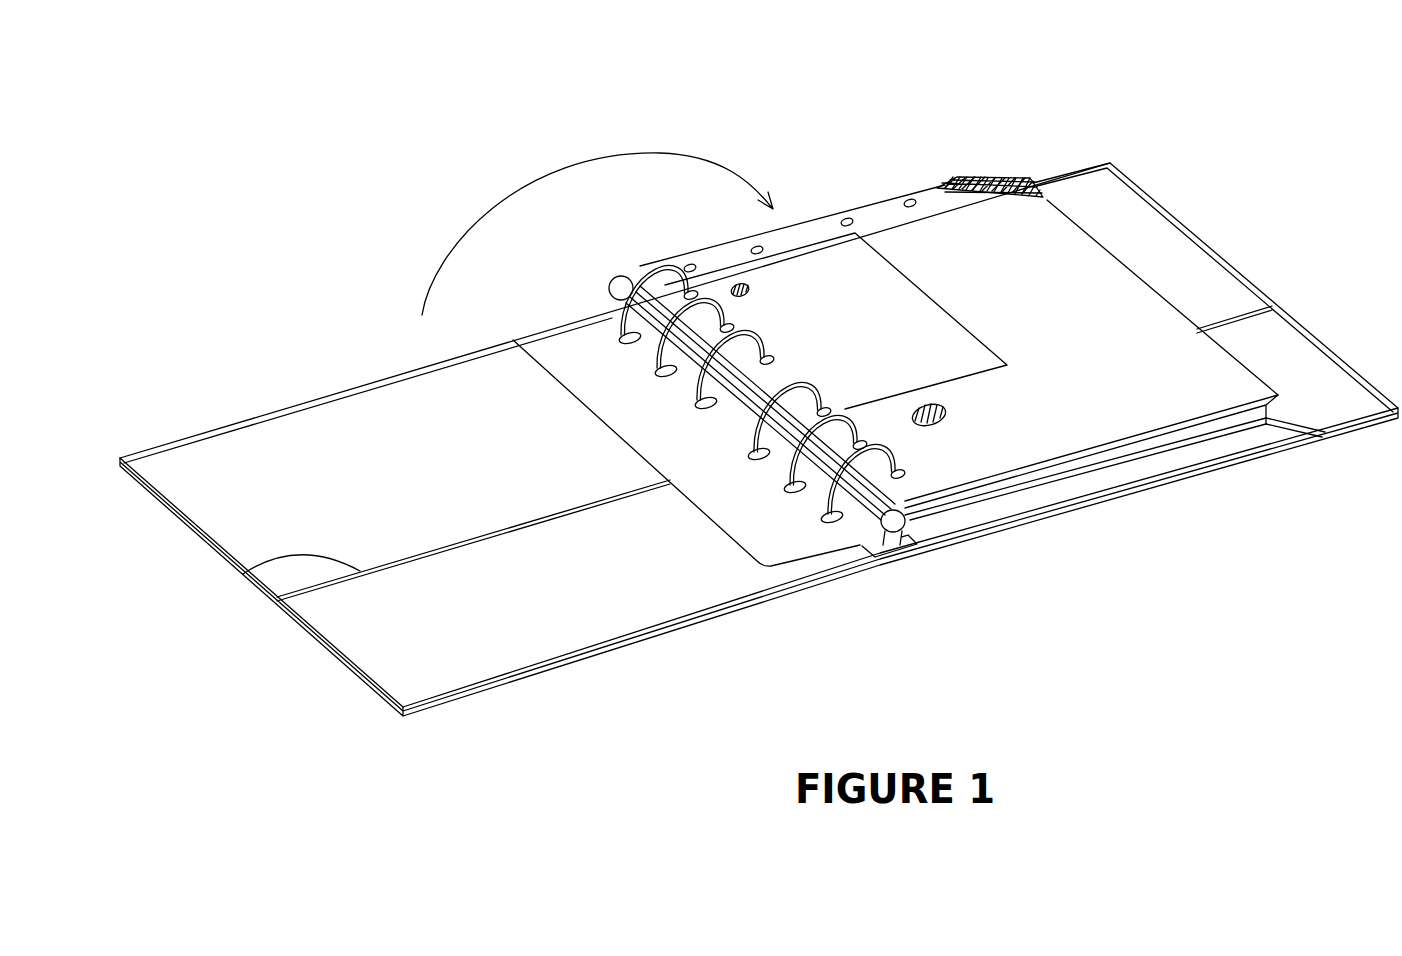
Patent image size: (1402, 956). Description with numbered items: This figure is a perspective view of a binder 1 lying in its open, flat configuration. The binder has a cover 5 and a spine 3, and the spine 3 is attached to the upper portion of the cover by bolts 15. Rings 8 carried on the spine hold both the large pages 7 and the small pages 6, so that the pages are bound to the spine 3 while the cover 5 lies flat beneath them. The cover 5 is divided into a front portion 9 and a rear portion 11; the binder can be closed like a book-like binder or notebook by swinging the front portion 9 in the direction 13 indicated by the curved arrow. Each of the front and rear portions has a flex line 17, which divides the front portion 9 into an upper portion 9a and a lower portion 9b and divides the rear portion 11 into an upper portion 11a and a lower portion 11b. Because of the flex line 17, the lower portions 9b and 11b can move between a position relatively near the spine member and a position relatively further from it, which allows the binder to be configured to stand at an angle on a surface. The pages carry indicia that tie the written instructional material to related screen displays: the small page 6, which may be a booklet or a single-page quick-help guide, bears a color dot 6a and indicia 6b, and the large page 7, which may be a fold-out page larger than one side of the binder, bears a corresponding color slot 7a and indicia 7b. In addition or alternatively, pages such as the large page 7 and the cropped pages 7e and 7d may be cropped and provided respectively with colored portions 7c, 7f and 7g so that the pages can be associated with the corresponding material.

The binder 1 is at (338, 198).
The spine 3 is at (892, 551).
The cover 5 is at (378, 355).
The small page 6 is at (823, 232).
The color dot 6a is at (712, 289).
The indicia 6b is at (837, 253).
The large page 7 is at (1180, 423).
The color slot 7a is at (950, 428).
The indicia 7b is at (1057, 393).
The colored portion 7c is at (947, 176).
The colored portion 7f is at (981, 174).
The colored portion 7g is at (1023, 175).
The cropped page 7d is at (1310, 440).
The cropped page 7e is at (1277, 430).
The rings 8 is at (678, 272).
The front portion 9 is at (327, 395).
The upper portion of front portion 9a is at (450, 477).
The lower portion of front portion 9b is at (547, 609).
The rear portion 11 is at (1190, 227).
The upper portion of rear portion 11a is at (1158, 249).
The lower portion of rear portion 11b is at (1311, 381).
The direction 13 is at (597, 220).
The bolts 15 is at (683, 360).
The flex line 17 is at (243, 574).